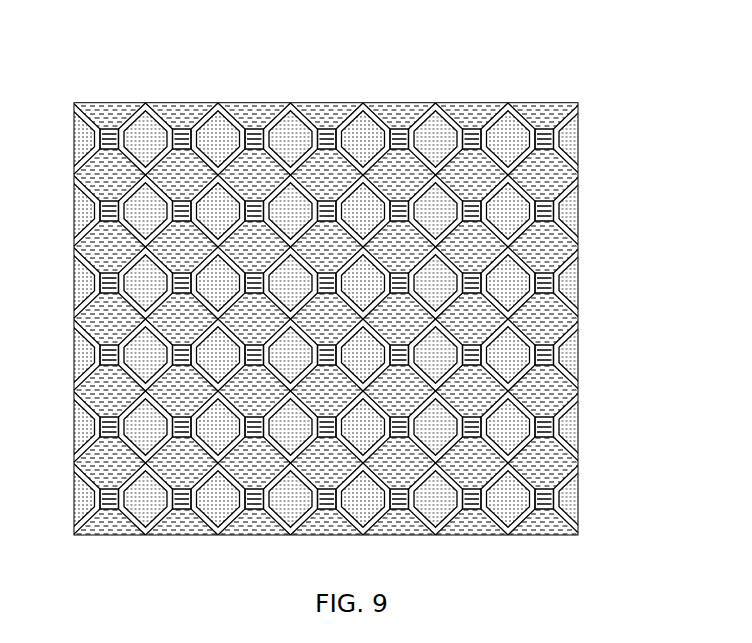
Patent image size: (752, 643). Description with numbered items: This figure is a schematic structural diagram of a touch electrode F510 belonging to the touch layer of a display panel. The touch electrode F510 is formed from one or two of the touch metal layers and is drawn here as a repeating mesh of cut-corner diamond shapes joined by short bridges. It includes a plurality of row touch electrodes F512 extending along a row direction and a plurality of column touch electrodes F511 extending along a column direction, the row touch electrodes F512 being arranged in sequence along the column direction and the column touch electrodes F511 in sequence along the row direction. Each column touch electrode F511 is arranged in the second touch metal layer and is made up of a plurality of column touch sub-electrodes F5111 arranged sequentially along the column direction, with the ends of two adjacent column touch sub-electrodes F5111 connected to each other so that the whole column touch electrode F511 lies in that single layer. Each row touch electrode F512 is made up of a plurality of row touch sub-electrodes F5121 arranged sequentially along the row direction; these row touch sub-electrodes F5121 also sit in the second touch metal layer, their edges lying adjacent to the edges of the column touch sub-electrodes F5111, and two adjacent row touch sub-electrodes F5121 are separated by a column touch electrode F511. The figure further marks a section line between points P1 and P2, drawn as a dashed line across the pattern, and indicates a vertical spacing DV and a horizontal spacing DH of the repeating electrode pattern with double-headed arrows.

The touch electrode F510 is at (369, 285).
The column touch electrode F511 is at (538, 108).
The row touch electrode F512 is at (362, 125).
The column touch sub-electrode F5111 is at (543, 250).
The row touch sub-electrode F5121 is at (570, 212).
The first position P1 is at (600, 138).
The second position P2 is at (600, 138).
The vertical direction DV is at (53, 403).
The horizontal direction DH is at (307, 550).